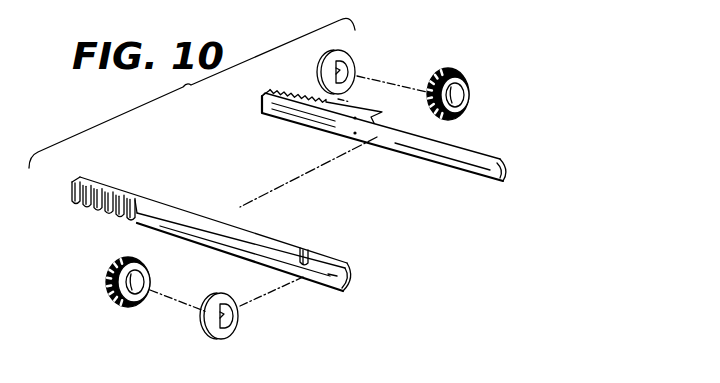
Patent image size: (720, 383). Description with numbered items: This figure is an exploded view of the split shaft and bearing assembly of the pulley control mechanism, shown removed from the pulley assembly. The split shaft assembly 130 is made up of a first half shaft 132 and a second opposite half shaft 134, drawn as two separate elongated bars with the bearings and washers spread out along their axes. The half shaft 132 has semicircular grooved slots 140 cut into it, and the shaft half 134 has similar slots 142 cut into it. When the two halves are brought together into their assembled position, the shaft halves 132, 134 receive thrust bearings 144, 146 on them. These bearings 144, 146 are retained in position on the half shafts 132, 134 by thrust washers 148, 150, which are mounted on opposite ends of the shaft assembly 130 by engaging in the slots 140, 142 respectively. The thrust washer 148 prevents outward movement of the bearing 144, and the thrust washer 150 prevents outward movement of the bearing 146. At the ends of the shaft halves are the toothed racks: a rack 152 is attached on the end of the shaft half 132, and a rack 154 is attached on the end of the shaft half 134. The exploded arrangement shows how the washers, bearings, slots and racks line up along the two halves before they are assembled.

The split shaft assembly 130 is at (534, 252).
The first half shaft 132 is at (506, 167).
The second opposite half shaft 134 is at (347, 293).
The semicircular grooved slots 140 is at (352, 136).
The slots 142 is at (301, 248).
The thrust bearing 144 is at (462, 78).
The thrust bearing 146 is at (146, 263).
The thrust washer 148 is at (348, 56).
The thrust washer 150 is at (233, 327).
The rack 152 is at (294, 78).
The rack 154 is at (101, 226).